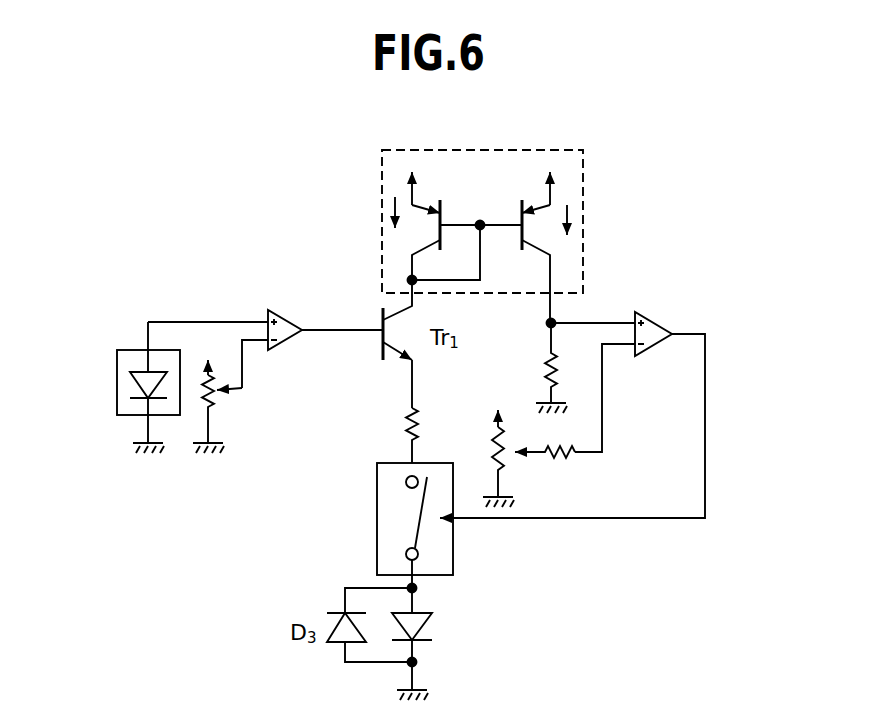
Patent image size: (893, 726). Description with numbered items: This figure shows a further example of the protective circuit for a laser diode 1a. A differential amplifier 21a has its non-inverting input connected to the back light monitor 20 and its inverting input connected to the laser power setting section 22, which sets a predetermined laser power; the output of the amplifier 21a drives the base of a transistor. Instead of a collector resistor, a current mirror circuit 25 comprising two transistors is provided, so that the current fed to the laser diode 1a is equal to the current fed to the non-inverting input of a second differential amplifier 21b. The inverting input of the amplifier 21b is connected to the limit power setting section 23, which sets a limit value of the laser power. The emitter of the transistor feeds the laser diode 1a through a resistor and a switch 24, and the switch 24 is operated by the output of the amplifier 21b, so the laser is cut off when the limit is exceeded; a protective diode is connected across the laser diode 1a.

The back light monitor 20 is at (132, 350).
The differential amplifier 21a is at (292, 318).
The differential amplifier 21b is at (655, 312).
The laser power setting section 22 is at (240, 413).
The limit power setting section 23 is at (532, 434).
The switch 24 is at (377, 507).
The current mirror circuit 25 is at (583, 195).
The laser diode 1a is at (452, 615).